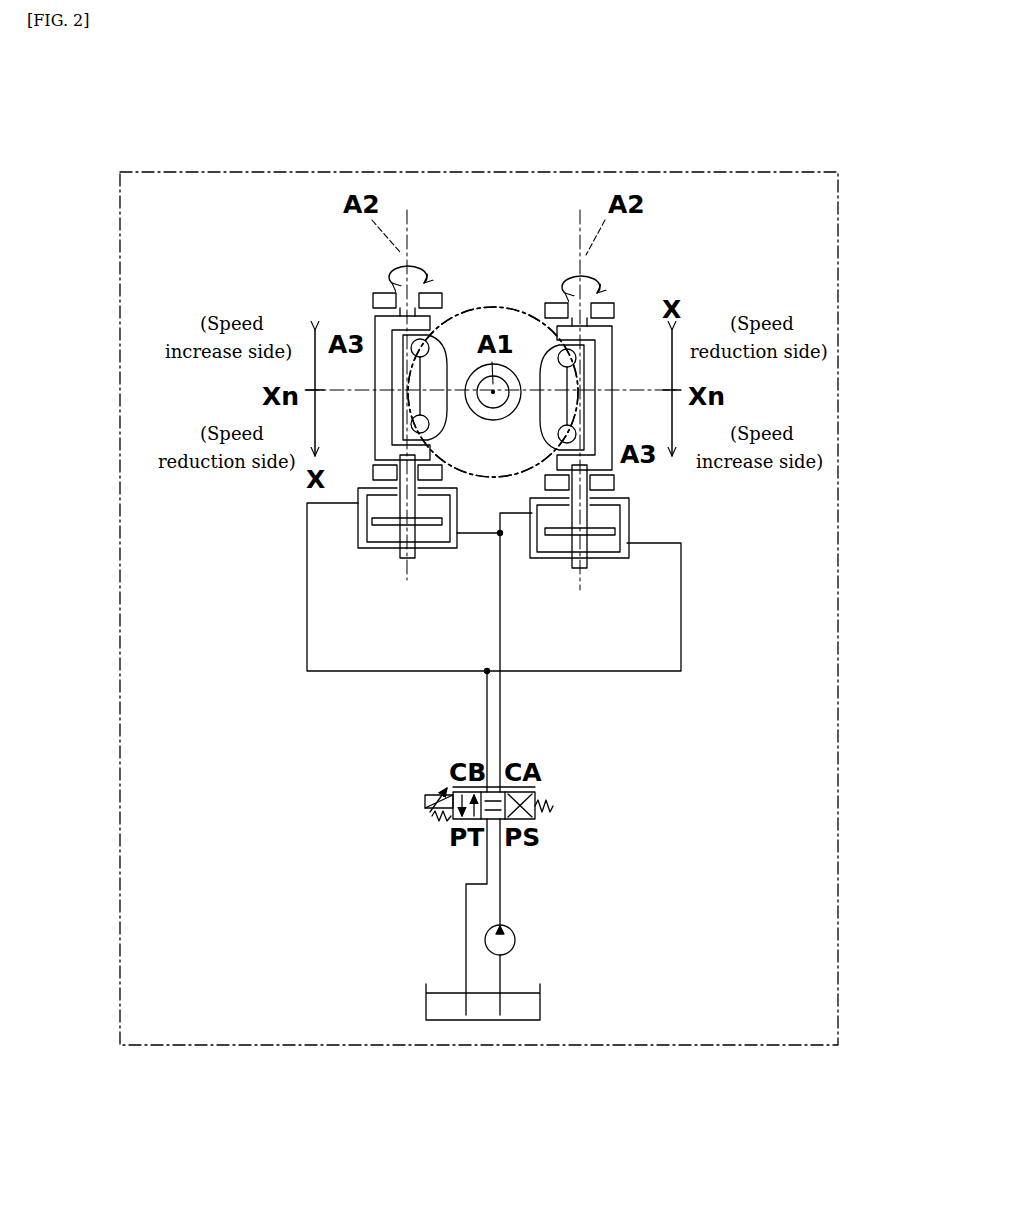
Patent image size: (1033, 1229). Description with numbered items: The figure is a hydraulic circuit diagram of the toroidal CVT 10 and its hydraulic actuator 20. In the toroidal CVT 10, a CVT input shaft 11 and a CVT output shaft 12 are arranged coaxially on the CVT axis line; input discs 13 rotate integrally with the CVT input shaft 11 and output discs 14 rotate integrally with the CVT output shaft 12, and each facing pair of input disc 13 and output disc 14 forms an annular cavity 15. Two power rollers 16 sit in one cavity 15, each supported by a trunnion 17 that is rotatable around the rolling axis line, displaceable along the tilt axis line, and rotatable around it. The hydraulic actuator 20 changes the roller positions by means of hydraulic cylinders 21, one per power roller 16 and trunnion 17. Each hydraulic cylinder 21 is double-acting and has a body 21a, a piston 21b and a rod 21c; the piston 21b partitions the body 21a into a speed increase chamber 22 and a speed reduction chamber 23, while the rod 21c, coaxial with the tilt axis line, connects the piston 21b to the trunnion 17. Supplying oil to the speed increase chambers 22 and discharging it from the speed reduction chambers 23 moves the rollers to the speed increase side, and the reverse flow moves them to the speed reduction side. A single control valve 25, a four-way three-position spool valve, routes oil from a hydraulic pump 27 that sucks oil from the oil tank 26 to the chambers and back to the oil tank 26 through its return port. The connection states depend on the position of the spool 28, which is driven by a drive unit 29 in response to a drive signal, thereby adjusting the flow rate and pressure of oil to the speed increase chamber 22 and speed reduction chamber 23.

The toroidal CVT 10 is at (620, 253).
The CVT input shaft 11 is at (512, 408).
The CVT output shaft 12 is at (492, 423).
The input disc 13 is at (497, 307).
The output disc 14 is at (493, 392).
The annular cavity 15 is at (478, 457).
The power roller 16 is at (466, 330).
The trunnion 17 is at (376, 330).
The hydraulic actuator 20 is at (278, 698).
The hydraulic cylinder 21 is at (356, 523).
The body 21a is at (368, 484).
The piston 21b is at (418, 527).
The rod 21c is at (407, 560).
The speed increase chamber 22 is at (388, 530).
The speed reduction chamber 23 is at (440, 503).
The control valve 25 is at (540, 794).
The oil tank 26 is at (542, 1010).
The hydraulic pump 27 is at (515, 935).
The spool 28 is at (450, 820).
The drive unit 29 is at (440, 790).